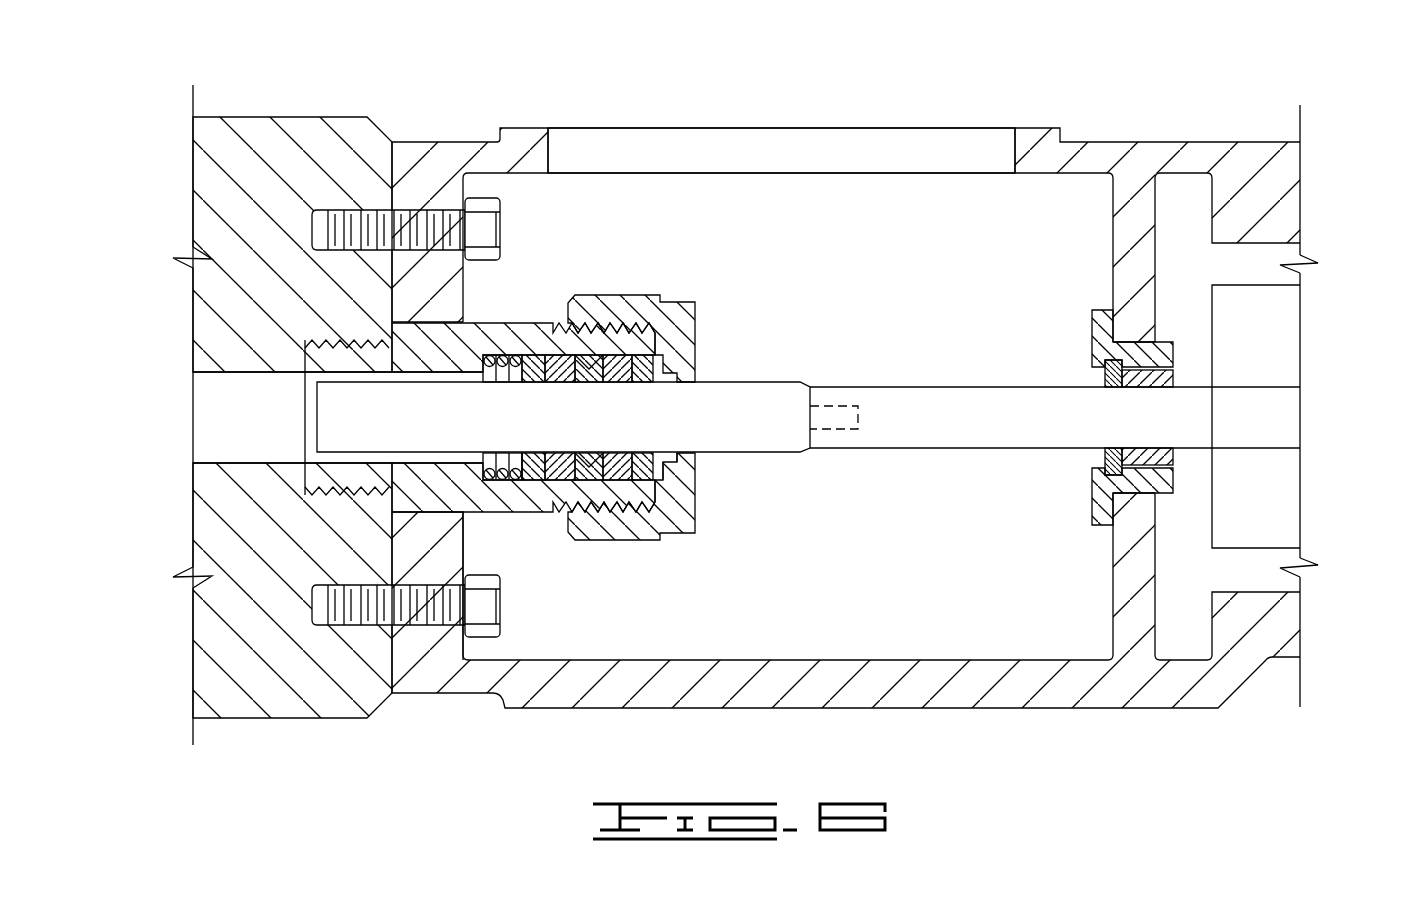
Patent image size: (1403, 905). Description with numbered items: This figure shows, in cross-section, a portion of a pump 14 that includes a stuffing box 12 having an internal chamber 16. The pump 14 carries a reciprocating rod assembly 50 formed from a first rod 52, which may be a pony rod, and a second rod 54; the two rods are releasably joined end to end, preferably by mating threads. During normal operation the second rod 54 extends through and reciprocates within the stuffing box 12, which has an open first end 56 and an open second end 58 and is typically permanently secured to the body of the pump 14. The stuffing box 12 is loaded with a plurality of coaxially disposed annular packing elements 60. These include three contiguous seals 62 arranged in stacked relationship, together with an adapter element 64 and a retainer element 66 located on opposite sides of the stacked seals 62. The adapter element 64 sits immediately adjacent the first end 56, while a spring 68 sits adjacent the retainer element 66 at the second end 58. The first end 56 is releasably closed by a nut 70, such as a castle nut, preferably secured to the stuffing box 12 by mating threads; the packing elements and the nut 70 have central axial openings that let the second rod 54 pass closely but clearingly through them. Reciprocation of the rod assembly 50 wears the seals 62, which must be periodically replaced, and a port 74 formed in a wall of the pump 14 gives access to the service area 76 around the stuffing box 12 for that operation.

The stuffing box 12 is at (517, 322).
The pump 14 is at (263, 116).
The internal chamber 16 is at (522, 477).
The reciprocating rod assembly 50 is at (812, 458).
The first rod 52 is at (1267, 398).
The second rod 54 is at (782, 385).
The first end 56 is at (695, 315).
The second end 58 is at (302, 358).
The annular packing elements 60 is at (590, 355).
The seals 62 is at (565, 478).
The adapter element 64 is at (650, 368).
The retainer element 66 is at (533, 355).
The spring 68 is at (487, 355).
The nut 70 is at (697, 498).
The port 74 is at (963, 128).
The service area 76 is at (763, 207).